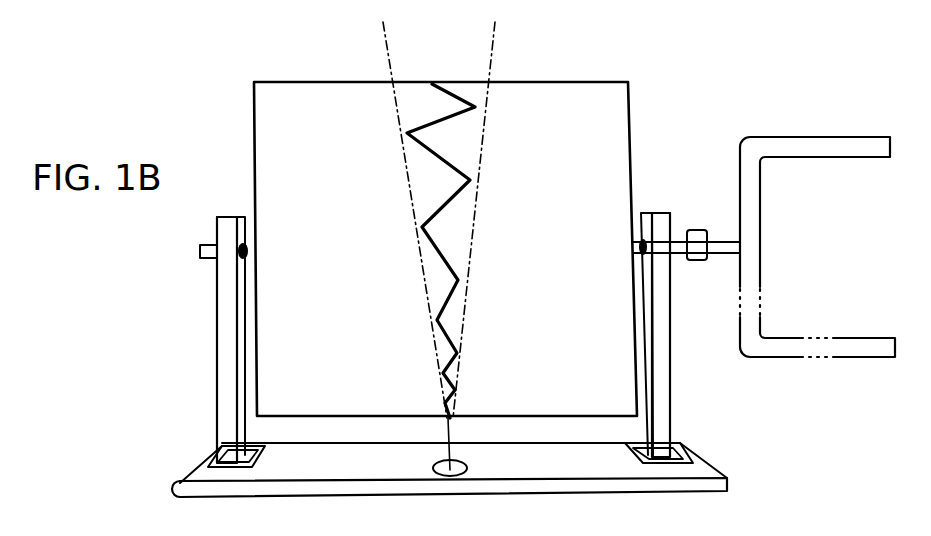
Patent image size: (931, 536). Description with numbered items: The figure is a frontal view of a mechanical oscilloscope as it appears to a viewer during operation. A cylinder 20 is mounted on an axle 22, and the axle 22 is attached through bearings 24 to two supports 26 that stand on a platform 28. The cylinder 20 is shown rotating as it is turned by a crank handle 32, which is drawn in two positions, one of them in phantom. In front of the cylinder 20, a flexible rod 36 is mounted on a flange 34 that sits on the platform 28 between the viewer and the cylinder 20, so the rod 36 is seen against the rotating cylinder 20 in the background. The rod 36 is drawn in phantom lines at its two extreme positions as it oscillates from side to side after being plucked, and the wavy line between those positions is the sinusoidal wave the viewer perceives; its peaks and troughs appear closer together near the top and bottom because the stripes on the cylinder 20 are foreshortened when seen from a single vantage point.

The cylinder 20 is at (555, 123).
The axle 22 is at (200, 250).
The bearings 24 is at (242, 217).
The supports 26 is at (228, 397).
The platform 28 is at (698, 471).
The crank handle 32 is at (755, 263).
The flange 34 is at (433, 470).
The flexible rod 36 is at (492, 35).